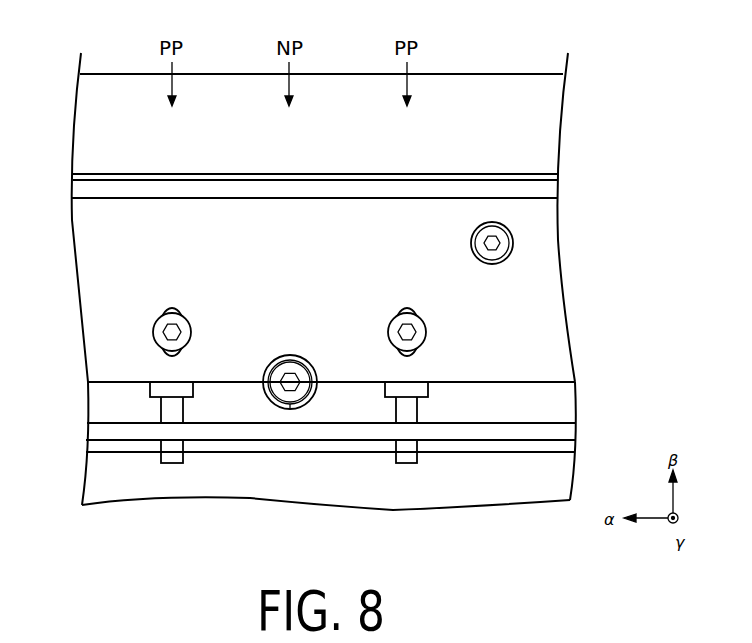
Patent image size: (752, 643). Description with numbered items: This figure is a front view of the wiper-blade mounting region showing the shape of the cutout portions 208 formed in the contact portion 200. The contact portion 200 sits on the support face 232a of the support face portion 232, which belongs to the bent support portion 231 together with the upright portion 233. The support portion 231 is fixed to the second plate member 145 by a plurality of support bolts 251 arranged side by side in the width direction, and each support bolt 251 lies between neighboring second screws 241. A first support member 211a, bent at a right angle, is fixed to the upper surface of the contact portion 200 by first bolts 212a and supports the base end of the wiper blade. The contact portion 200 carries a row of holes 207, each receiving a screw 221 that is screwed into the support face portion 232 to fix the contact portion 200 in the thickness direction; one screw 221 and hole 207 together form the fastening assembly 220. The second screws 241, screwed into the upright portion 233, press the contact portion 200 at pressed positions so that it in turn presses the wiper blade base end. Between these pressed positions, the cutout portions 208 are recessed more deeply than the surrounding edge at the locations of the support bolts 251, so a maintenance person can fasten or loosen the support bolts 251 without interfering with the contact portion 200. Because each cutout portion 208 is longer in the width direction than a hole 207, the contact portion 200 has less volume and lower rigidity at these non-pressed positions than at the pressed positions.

The contact portion 200 is at (556, 328).
The first support member 211a is at (548, 206).
The first bolts 212a is at (517, 236).
The support face portion 232 is at (563, 396).
The support face 232a is at (556, 413).
The upright portion 233 is at (568, 430).
The support portion 231 is at (88, 409).
The second plate member 145 is at (95, 476).
The second screws 241 is at (172, 465).
The cutout portions 208 is at (278, 353).
The support bolts 251 is at (290, 410).
The fastening assembly 220 is at (294, 297).
The screw 221 is at (158, 318).
The holes 207 is at (186, 320).